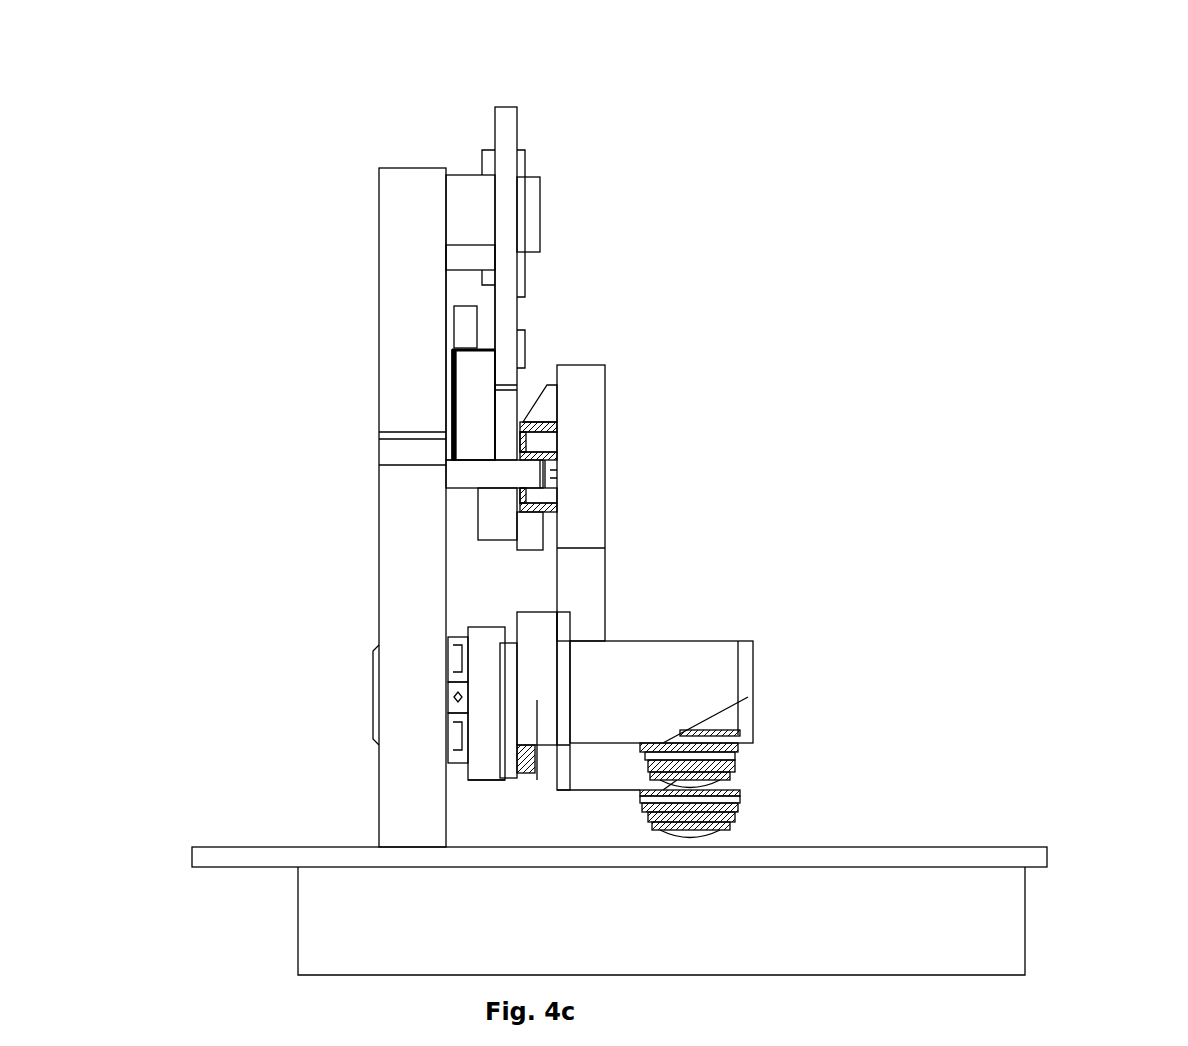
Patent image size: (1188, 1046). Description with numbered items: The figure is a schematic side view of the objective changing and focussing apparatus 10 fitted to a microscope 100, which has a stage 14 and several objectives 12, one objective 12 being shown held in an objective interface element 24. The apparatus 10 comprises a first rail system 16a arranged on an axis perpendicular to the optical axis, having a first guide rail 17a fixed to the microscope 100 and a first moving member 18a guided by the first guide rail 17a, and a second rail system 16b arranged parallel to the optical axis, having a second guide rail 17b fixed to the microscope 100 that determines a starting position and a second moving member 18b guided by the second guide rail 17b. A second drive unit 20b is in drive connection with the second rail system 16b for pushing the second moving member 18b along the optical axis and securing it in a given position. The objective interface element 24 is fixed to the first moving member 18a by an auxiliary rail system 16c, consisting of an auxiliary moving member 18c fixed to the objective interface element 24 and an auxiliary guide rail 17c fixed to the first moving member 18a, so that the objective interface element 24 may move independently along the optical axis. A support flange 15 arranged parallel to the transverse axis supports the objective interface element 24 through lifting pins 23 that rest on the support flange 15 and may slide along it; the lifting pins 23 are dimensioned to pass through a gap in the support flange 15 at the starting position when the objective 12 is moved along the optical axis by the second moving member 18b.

The microscope 100 is at (689, 541).
The objective changing and focussing apparatus 10 is at (585, 522).
The objective 12 is at (708, 743).
The stage 14 is at (945, 900).
The support flange 15 is at (485, 467).
The first rail system 16a is at (472, 622).
The second rail system 16b is at (438, 358).
The auxiliary rail system 16c is at (558, 769).
The first guide rail 17a is at (452, 737).
The second guide rail 17b is at (462, 322).
The auxiliary guide rail 17c is at (523, 762).
The first moving member 18a is at (472, 745).
The second moving member 18b is at (498, 428).
The auxiliary moving member 18c is at (540, 780).
The second drive unit 20b is at (530, 235).
The lifting pin 23 is at (548, 500).
The objective interface element 24 is at (690, 672).